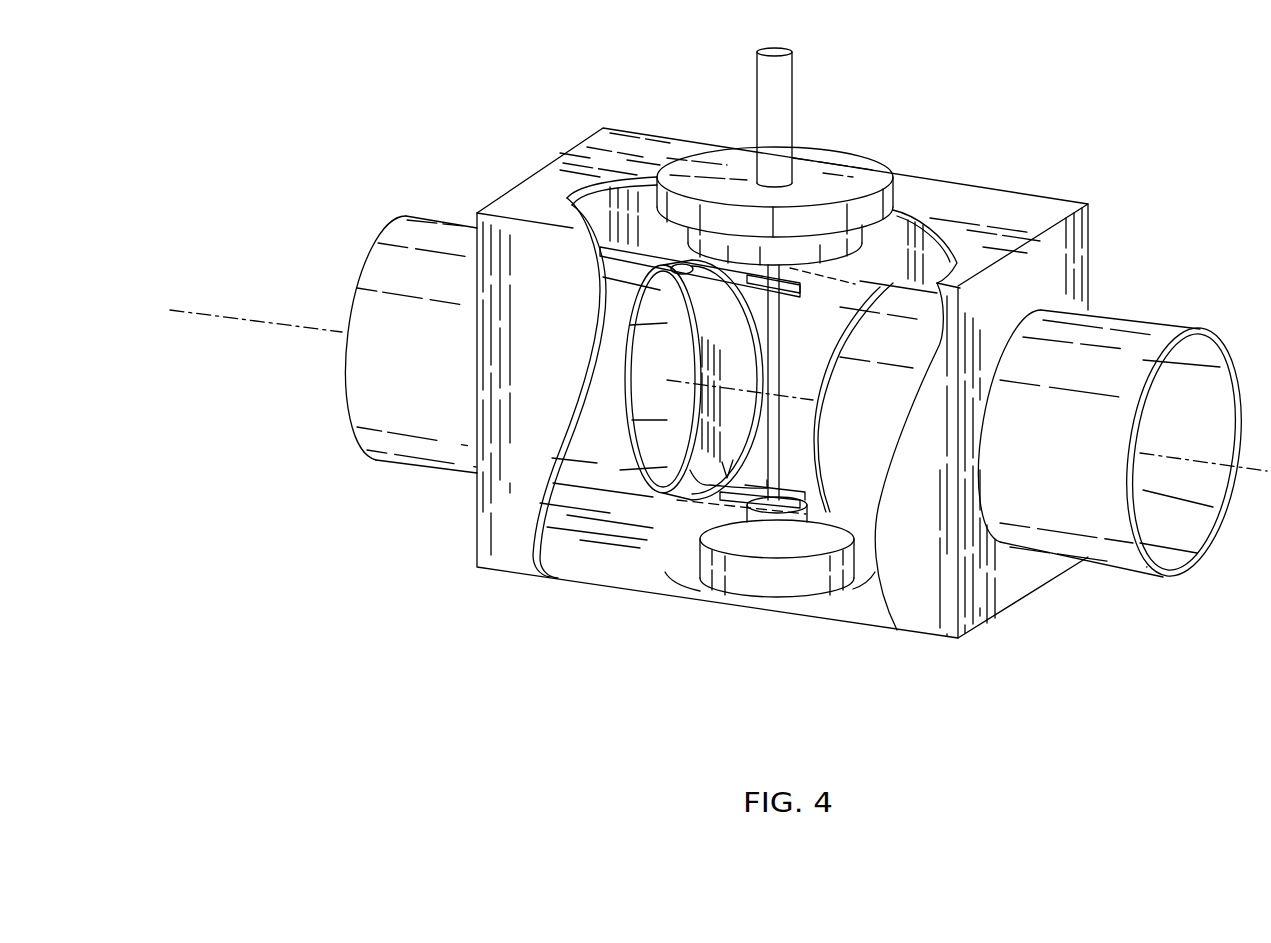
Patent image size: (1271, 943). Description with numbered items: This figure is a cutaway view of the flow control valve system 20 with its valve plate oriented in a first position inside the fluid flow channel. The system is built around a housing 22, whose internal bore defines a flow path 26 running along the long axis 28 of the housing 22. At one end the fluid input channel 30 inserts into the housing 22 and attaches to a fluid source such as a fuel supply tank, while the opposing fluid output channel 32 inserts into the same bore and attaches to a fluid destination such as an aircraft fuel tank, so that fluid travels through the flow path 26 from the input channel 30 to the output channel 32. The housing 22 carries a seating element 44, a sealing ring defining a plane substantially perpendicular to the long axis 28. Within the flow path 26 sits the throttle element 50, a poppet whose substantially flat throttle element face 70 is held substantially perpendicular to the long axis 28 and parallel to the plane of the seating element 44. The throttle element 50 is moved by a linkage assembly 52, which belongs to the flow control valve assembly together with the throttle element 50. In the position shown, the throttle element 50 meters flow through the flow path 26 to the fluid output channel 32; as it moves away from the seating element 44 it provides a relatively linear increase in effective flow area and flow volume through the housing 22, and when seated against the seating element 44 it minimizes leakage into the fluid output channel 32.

The flow control valve system 20 is at (1000, 103).
The housing 22 is at (1003, 187).
The flow path 26 is at (820, 305).
The long axis 28 is at (295, 324).
The fluid input channel 30 is at (1153, 322).
The fluid output channel 32 is at (421, 213).
The seating element 44 is at (668, 262).
The throttle element 50 is at (683, 422).
The linkage assembly 52 is at (806, 515).
The throttle element face 70 is at (663, 368).